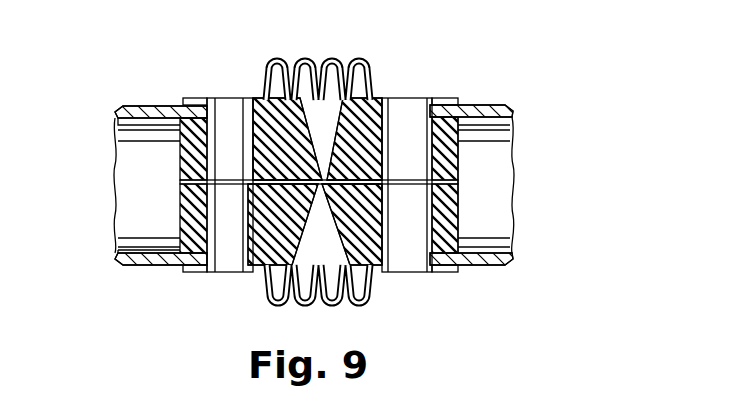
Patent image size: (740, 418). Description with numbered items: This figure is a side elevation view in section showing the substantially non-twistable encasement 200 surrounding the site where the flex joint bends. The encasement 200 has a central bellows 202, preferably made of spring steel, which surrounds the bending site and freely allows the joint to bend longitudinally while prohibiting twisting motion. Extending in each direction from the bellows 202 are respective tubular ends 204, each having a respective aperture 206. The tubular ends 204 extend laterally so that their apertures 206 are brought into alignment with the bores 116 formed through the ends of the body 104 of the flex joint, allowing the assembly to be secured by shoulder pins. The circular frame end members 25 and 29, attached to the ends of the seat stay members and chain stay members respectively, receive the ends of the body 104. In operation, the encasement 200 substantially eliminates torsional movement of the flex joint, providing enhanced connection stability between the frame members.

The circular frame end member 25 is at (135, 107).
The circular frame end member 29 is at (490, 266).
The body 104 is at (268, 262).
The bore 116 is at (222, 138).
The non-twistable encasement 200 is at (388, 179).
The central bellows 202 is at (328, 56).
The tubular end 204 is at (197, 100).
The aperture 206 is at (403, 100).